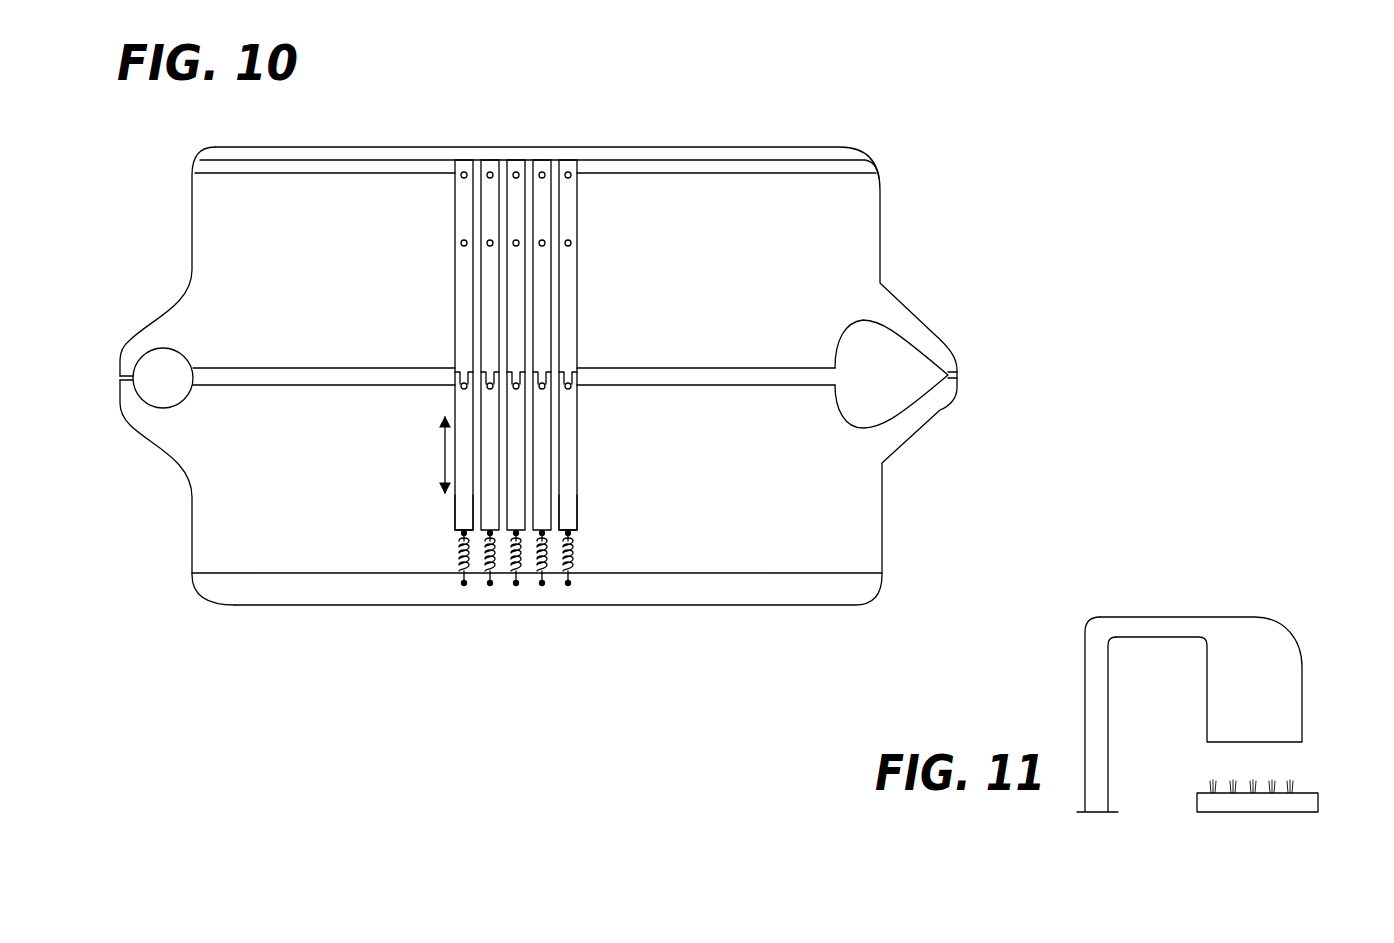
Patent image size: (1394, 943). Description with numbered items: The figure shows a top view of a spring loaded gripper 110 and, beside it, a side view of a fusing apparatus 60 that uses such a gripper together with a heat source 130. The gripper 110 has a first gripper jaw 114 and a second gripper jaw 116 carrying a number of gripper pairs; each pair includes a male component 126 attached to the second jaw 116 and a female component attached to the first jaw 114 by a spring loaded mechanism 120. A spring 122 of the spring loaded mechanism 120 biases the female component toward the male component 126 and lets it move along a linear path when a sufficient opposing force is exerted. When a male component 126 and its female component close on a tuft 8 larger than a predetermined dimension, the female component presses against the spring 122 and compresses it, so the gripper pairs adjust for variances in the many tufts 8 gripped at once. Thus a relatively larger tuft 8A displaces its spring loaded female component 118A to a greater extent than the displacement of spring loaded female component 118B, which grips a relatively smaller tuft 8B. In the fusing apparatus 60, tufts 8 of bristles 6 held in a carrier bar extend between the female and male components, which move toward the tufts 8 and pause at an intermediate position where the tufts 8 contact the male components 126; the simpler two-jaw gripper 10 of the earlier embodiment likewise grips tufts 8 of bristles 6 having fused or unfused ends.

In FIG. 10, the gripper 110 is at (697, 102).
In FIG. 10, the second gripper jaw 116 is at (203, 265).
In FIG. 10, the first gripper jaw 114 is at (197, 530).
In FIG. 10, the male component 126 is at (462, 195).
In FIG. 10, the relatively larger tuft 8A is at (455, 389).
In FIG. 10, the relatively smaller tuft 8B is at (577, 390).
In FIG. 10, the spring loaded female component 118A is at (455, 507).
In FIG. 10, the spring loaded female component 118B is at (577, 505).
In FIG. 10, the spring loaded mechanism 120 is at (456, 561).
In FIG. 10, the spring 122 is at (471, 566).
In FIG. 11, the fusing apparatus 60 is at (1162, 579).
In FIG. 11, the heat source 130 is at (1250, 617).
In FIG. 11, the tufts 8 is at (1204, 779).
In FIG. 11, the bristles 6 is at (1297, 786).
In FIG. 11, the gripper 10 is at (1300, 803).